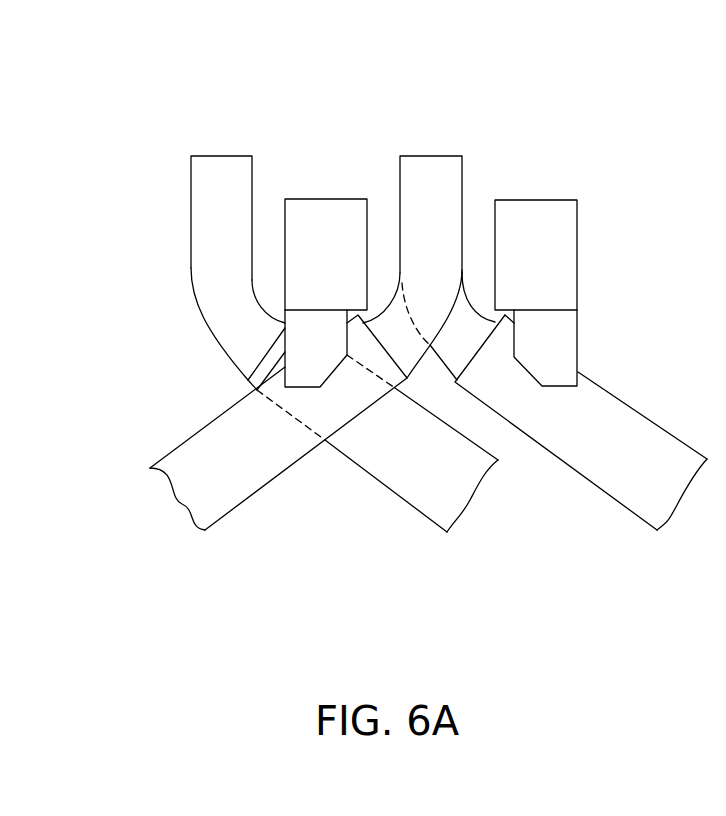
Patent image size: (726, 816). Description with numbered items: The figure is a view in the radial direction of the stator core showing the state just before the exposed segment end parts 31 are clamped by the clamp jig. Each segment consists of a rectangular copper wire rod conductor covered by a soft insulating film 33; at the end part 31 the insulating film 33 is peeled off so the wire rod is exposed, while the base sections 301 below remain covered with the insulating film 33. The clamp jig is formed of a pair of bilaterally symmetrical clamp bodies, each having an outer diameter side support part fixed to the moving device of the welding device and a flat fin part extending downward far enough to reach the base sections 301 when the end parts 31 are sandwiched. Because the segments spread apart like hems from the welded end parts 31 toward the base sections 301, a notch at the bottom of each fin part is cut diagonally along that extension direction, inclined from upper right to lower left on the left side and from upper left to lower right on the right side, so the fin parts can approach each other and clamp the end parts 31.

The segment end part 31 is at (195, 198).
The insulating film 33 is at (411, 470).
The base section 301 is at (237, 497).